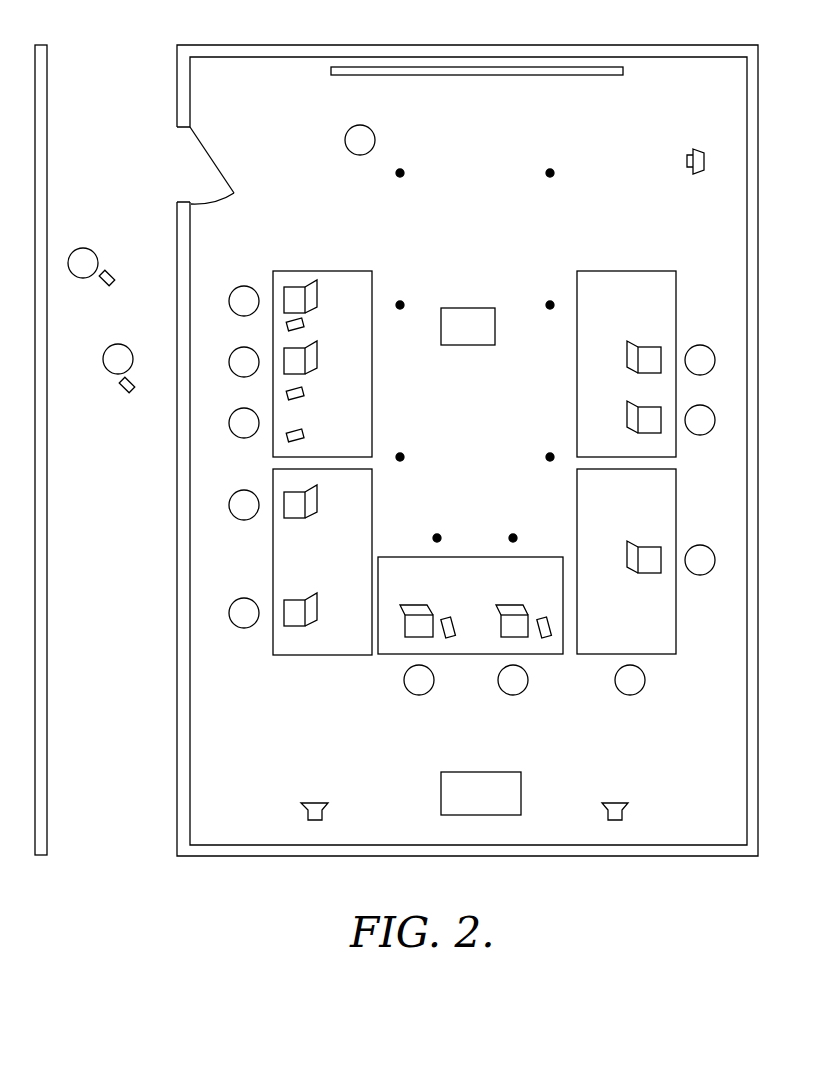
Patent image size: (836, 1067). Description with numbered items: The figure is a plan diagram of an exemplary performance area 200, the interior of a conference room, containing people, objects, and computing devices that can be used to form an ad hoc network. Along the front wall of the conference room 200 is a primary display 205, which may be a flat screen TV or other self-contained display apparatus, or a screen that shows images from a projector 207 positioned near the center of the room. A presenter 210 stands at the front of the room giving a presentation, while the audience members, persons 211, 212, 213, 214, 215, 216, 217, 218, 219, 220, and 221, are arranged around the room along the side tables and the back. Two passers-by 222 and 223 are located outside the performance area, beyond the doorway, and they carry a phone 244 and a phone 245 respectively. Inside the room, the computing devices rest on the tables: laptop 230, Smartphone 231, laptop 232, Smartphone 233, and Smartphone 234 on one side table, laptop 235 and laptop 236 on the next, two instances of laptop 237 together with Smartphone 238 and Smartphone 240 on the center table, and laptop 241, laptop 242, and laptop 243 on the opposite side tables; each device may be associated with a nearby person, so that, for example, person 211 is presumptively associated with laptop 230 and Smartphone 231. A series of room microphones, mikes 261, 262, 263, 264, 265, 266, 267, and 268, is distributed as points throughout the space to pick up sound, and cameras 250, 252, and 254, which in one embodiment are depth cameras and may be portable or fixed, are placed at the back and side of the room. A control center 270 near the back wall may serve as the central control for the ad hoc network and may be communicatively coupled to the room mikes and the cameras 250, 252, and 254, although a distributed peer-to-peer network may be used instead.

The performance area 200 is at (221, 45).
The primary display 205 is at (507, 75).
The projector 207 is at (461, 308).
The presenter 210 is at (353, 128).
The person 211 is at (231, 295).
The person 212 is at (231, 356).
The person 213 is at (231, 417).
The person 214 is at (231, 499).
The person 215 is at (231, 607).
The person 216 is at (423, 694).
The person 217 is at (517, 694).
The person 218 is at (634, 694).
The person 219 is at (704, 546).
The person 220 is at (706, 409).
The person 221 is at (706, 349).
The passer-by 222 is at (84, 248).
The passer-by 223 is at (105, 352).
The laptop 230 is at (318, 294).
The Smartphone 231 is at (305, 323).
The laptop 232 is at (318, 355).
The Smartphone 233 is at (305, 392).
The Smartphone 234 is at (305, 433).
The laptop 235 is at (318, 500).
The laptop 236 is at (318, 608).
The laptop 237 is at (412, 605).
The Smartphone 238 is at (448, 618).
The Smartphone 240 is at (542, 618).
The laptop 241 is at (627, 555).
The laptop 242 is at (627, 415).
The laptop 243 is at (627, 355).
The phone 244 is at (111, 270).
The phone 245 is at (124, 393).
The camera 250 is at (315, 803).
The camera 252 is at (615, 803).
The camera 254 is at (687, 160).
The mike 261 is at (400, 168).
The mike 262 is at (550, 168).
The mike 263 is at (400, 300).
The mike 264 is at (400, 452).
The mike 265 is at (437, 533).
The mike 266 is at (513, 533).
The mike 267 is at (550, 452).
The mike 268 is at (550, 300).
The control center 270 is at (481, 793).